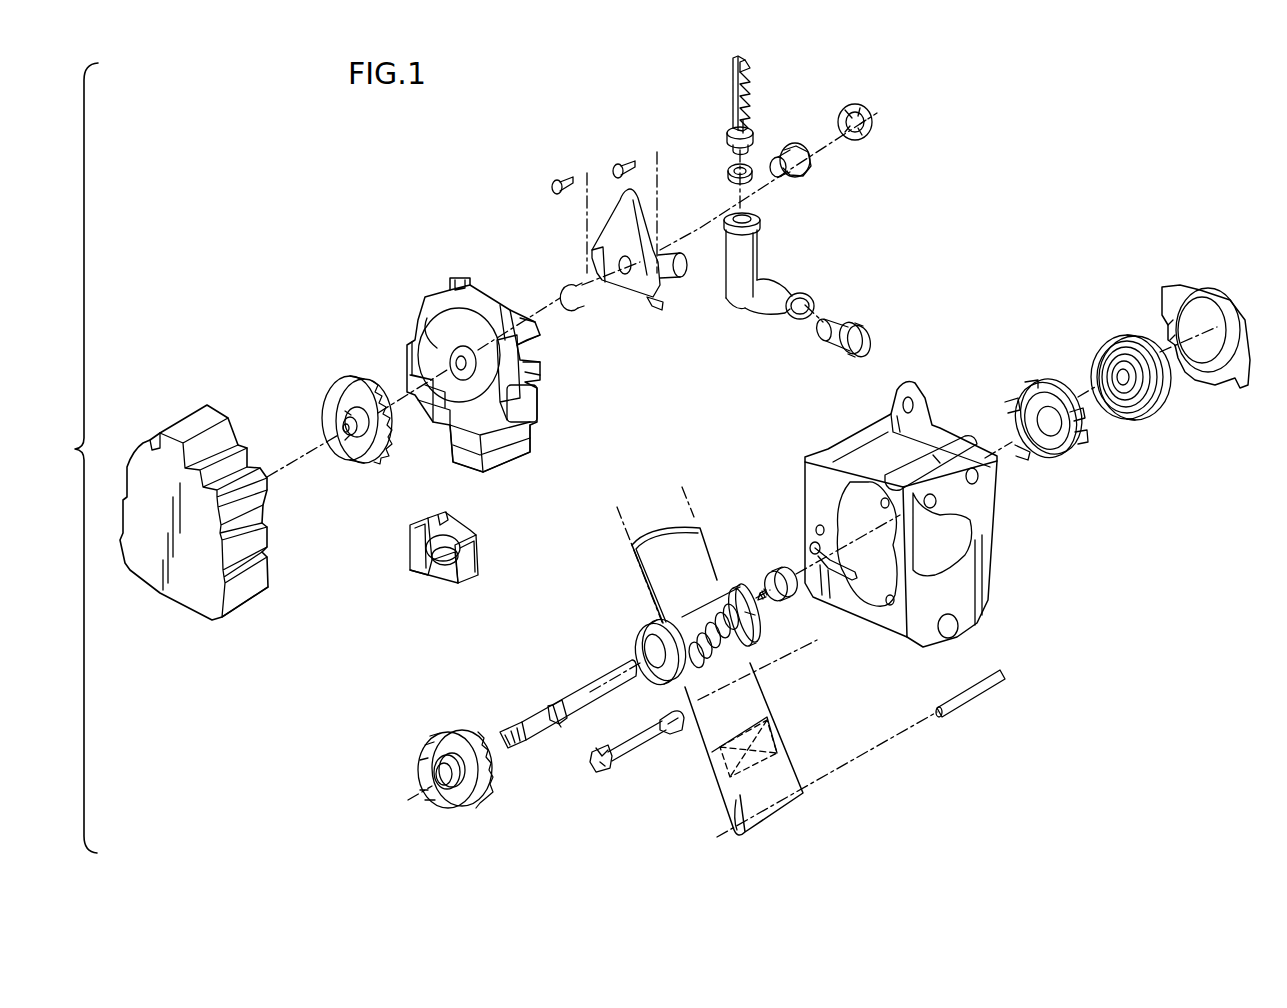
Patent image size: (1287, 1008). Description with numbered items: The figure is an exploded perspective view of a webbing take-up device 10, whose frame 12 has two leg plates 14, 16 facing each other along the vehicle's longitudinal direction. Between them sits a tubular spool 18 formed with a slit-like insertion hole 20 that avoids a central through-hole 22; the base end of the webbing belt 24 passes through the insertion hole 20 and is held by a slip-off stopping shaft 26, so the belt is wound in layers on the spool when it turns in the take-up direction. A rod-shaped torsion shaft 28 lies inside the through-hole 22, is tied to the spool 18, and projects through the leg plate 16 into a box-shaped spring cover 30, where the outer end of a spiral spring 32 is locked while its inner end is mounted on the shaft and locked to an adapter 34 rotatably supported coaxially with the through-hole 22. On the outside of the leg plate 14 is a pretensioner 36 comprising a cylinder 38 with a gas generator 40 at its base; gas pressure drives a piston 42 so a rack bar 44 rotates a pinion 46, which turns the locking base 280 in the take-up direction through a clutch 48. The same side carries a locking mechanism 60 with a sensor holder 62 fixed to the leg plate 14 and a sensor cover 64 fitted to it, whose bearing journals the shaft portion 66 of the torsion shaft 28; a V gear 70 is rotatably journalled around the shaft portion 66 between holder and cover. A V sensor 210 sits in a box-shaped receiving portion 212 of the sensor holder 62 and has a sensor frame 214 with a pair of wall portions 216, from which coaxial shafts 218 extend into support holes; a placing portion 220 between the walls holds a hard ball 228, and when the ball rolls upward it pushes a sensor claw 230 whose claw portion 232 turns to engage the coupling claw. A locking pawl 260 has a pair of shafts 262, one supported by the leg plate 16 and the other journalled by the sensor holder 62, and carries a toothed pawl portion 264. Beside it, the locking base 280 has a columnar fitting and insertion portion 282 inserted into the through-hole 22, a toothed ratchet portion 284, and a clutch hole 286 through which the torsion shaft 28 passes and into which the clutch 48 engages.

The webbing take-up device 10 is at (248, 318).
The frame 12 is at (930, 524).
The leg plate 14 is at (858, 615).
The leg plate 16 is at (975, 492).
The spool 18 is at (737, 620).
The insertion hole 20 is at (703, 597).
The through-hole 22 is at (650, 652).
The webbing belt 24 is at (700, 530).
The slip-off stopping shaft 26 is at (985, 688).
The torsion shaft 28 is at (568, 691).
The spring cover 30 is at (1230, 298).
The spiral spring 32 is at (1128, 335).
The adapter 34 is at (775, 572).
The pretensioner 36 is at (815, 207).
The cylinder 38 is at (757, 255).
The gas generator 40 is at (834, 325).
The piston 42 is at (750, 128).
The rack bar 44 is at (750, 67).
The pinion 46 is at (808, 178).
The clutch 48 is at (862, 142).
The locking mechanism 60 is at (362, 389).
The sensor holder 62 is at (545, 407).
The sensor cover 64 is at (205, 415).
The shaft portion 66 is at (520, 724).
The V gear 70 is at (358, 378).
The V sensor 210 is at (453, 564).
The receiving portion 212 is at (480, 465).
The sensor frame 214 is at (405, 566).
The wall portions 216 is at (405, 540).
The shafts 218 is at (412, 525).
The placing portion 220 is at (445, 578).
The hard ball 228 is at (432, 562).
The sensor claw 230 is at (445, 470).
The claw portion 232 is at (470, 540).
The locking pawl 260 is at (649, 751).
The shafts 262 is at (598, 768).
The pawl portion 264 is at (606, 750).
The locking base 280 is at (481, 751).
The fitting and insertion portion 282 is at (490, 772).
The ratchet portion 284 is at (470, 806).
The clutch hole 286 is at (440, 785).